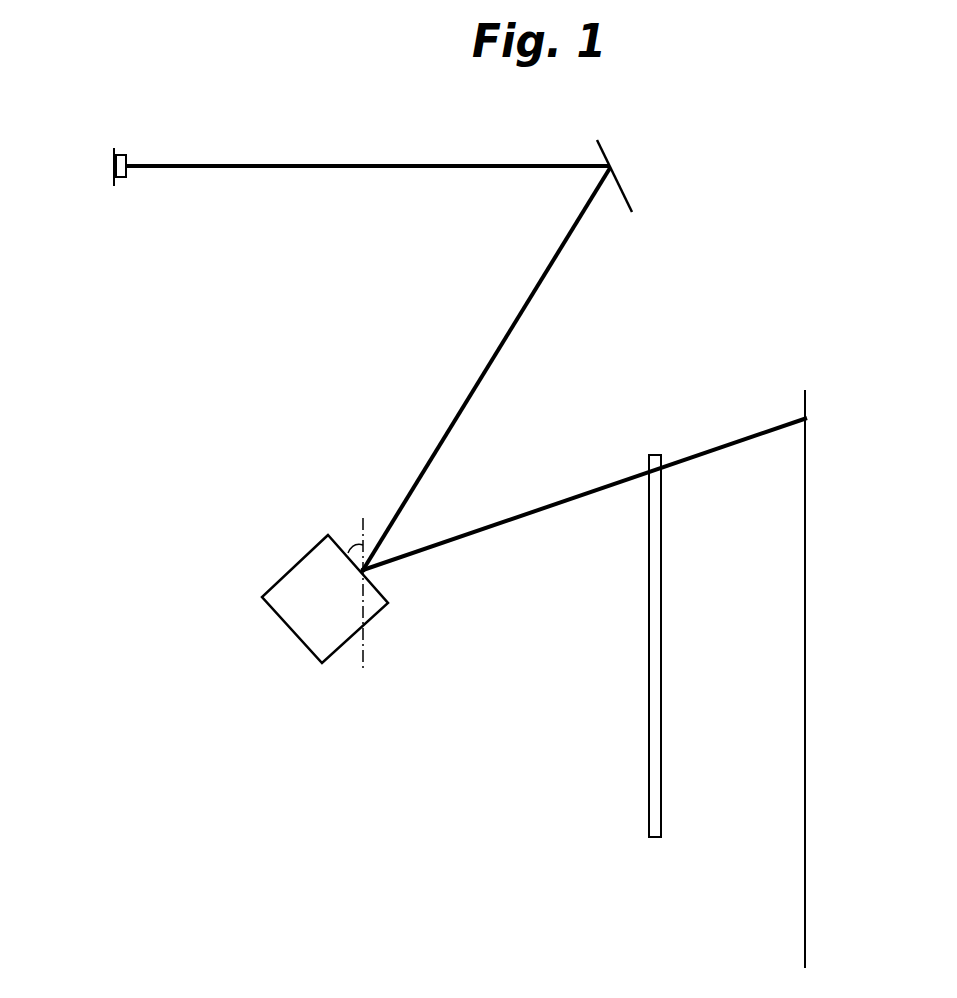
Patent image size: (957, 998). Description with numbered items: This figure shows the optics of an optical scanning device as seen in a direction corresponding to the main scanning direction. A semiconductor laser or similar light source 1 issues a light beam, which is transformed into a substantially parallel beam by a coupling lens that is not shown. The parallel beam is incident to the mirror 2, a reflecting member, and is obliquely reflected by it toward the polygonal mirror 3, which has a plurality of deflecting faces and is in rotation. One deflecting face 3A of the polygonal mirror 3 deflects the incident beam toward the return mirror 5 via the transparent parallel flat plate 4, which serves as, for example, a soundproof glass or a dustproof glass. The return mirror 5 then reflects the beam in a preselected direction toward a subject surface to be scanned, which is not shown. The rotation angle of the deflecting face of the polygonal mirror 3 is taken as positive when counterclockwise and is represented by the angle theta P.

The light source 1 is at (120, 154).
The mirror 2 is at (602, 152).
The polygonal mirror 3 is at (294, 641).
The reflecting surface of polygon mirror 3A is at (386, 598).
The parallel flat plate 4 is at (648, 762).
The return mirror 5 is at (806, 775).